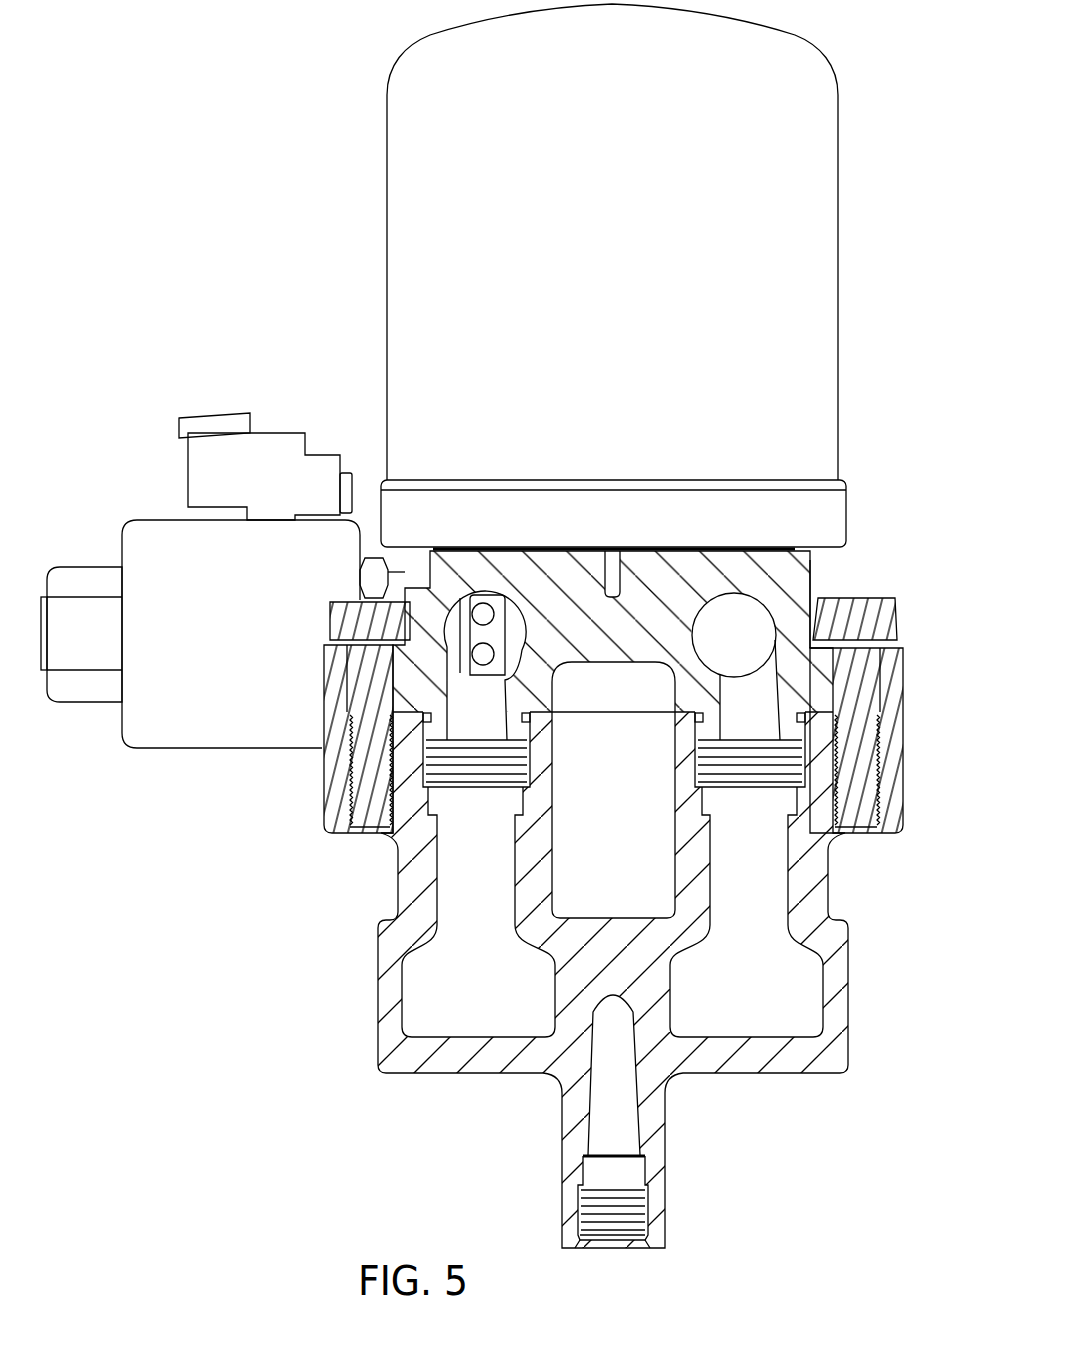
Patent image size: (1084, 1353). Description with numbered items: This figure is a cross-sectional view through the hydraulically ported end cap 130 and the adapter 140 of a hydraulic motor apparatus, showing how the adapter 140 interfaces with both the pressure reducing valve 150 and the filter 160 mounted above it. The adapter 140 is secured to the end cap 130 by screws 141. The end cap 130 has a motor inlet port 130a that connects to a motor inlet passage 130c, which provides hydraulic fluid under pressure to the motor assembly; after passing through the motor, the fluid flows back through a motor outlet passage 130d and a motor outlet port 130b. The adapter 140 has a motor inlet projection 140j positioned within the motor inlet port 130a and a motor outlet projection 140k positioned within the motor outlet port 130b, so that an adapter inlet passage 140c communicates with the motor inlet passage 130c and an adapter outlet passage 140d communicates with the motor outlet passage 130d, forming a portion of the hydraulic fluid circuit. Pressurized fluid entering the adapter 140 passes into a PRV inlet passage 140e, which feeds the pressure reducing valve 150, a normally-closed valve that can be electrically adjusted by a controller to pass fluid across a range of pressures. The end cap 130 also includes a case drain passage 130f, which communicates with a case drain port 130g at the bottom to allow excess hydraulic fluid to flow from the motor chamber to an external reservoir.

The end cap 130 is at (333, 790).
The motor inlet port 130a is at (804, 640).
The motor outlet port 130b is at (425, 625).
The motor inlet passage 130c is at (748, 884).
The motor outlet passage 130d is at (480, 878).
The case drain passage 130f is at (630, 1117).
The case drain port 130g is at (645, 1240).
The adapter 140 is at (333, 682).
The adapter inlet passage 140c is at (750, 703).
The adapter outlet passage 140d is at (483, 705).
The PRV inlet passage 140e is at (725, 628).
The motor inlet projection 140j is at (692, 720).
The motor outlet projection 140k is at (513, 728).
The screws 141 is at (340, 612).
The pressure reducing valve 150 is at (219, 649).
The filter 160 is at (637, 267).